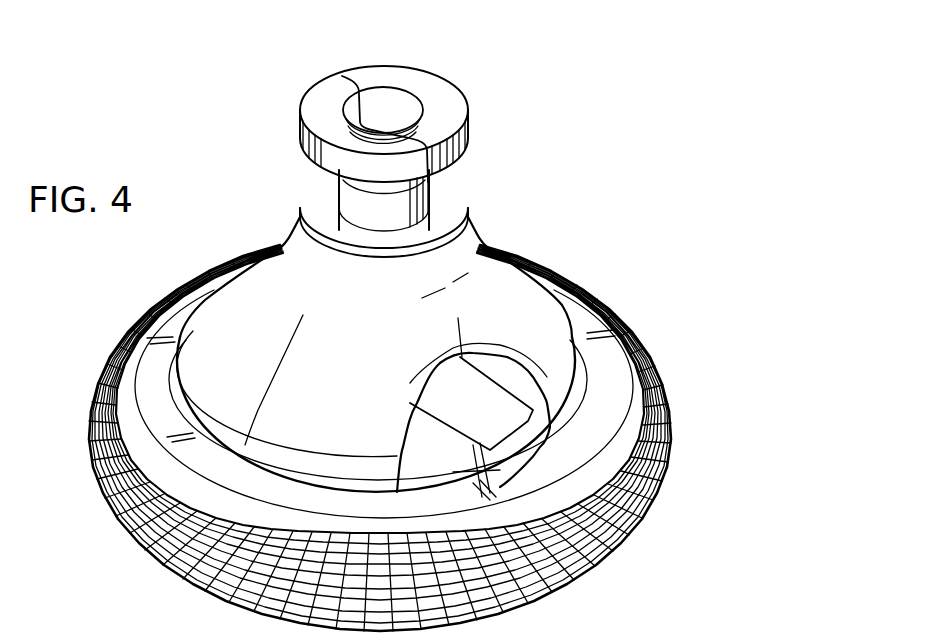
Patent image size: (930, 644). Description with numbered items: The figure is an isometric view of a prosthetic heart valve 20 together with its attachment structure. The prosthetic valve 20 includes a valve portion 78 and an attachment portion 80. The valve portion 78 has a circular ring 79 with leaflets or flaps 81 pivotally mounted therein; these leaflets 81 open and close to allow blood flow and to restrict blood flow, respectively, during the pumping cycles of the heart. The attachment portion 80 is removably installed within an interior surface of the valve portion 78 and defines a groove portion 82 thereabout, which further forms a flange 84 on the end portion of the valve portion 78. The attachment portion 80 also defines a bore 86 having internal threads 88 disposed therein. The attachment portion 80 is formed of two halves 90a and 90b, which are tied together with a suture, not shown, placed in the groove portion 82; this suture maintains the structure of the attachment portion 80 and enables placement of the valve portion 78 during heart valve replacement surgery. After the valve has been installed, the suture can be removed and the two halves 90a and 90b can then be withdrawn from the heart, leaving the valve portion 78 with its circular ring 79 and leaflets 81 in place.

The prosthetic valve 20 is at (566, 132).
The flange 84 is at (318, 92).
The bore 86 is at (403, 90).
The internal threads 88 is at (373, 100).
The groove portion 82 is at (440, 200).
The attachment portion 80 is at (386, 380).
The half of attachment portion 90a is at (217, 327).
The half of attachment portion 90b is at (530, 303).
The leaflets 81 is at (523, 440).
The circular ring 79 is at (623, 402).
The valve portion 78 is at (600, 465).